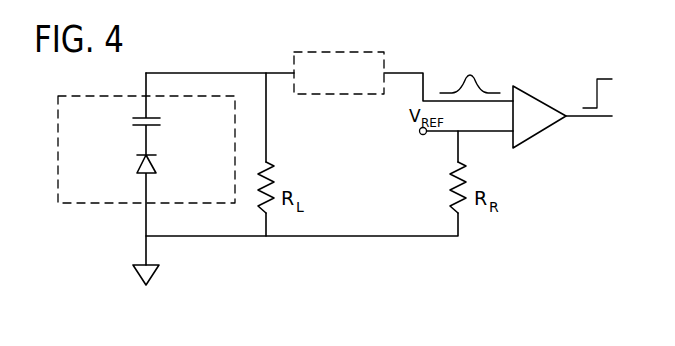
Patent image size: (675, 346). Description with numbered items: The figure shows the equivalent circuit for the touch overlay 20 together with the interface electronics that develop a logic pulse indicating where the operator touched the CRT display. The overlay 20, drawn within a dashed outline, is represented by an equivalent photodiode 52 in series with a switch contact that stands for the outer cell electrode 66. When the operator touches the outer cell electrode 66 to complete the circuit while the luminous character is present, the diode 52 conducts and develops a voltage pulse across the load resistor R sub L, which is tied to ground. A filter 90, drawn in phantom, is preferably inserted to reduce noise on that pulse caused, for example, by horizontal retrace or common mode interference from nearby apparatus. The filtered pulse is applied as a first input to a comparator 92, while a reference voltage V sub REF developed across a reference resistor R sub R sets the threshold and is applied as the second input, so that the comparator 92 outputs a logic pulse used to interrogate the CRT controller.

The overlay 20 is at (116, 207).
The photodiode 52 is at (156, 166).
The outer cell electrode 66 is at (161, 121).
The filter 90 is at (345, 50).
The comparator 92 is at (530, 103).